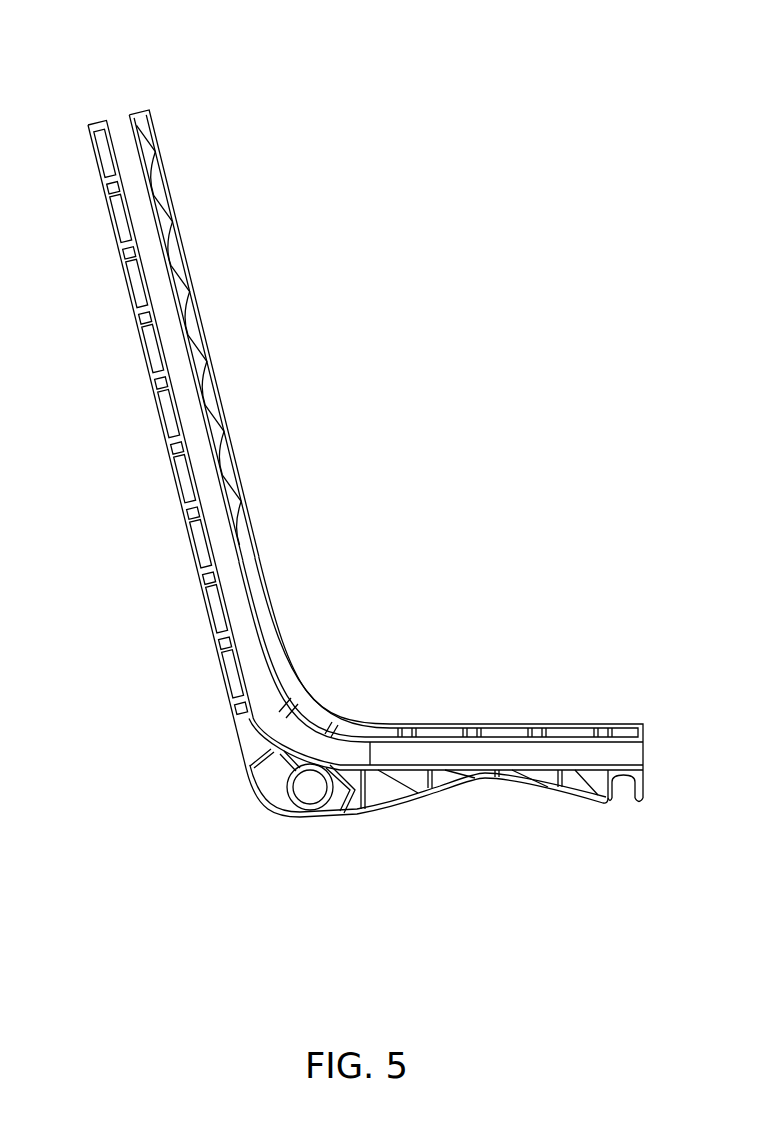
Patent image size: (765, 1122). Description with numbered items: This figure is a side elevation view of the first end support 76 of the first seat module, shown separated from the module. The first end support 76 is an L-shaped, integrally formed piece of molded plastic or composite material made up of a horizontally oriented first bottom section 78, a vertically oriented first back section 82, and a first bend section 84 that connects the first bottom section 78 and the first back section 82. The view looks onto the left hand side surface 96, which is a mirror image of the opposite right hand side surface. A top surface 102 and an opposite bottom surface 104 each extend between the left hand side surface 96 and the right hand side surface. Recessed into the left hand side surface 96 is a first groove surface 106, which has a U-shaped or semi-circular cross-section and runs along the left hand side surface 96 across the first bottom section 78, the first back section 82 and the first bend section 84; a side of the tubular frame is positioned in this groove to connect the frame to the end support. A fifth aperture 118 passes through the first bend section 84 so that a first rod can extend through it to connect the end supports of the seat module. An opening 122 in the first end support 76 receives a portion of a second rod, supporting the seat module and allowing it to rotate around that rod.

The first end support 76 is at (118, 108).
The first back section 82 is at (152, 406).
The bottom surface 104 is at (140, 340).
The left hand side surface 96 is at (183, 537).
The first groove surface 106 is at (197, 450).
The first bend section 84 is at (265, 812).
The fifth aperture 118 is at (310, 796).
The first bottom section 78 is at (482, 785).
The top surface 102 is at (441, 723).
The opening 122 is at (625, 792).